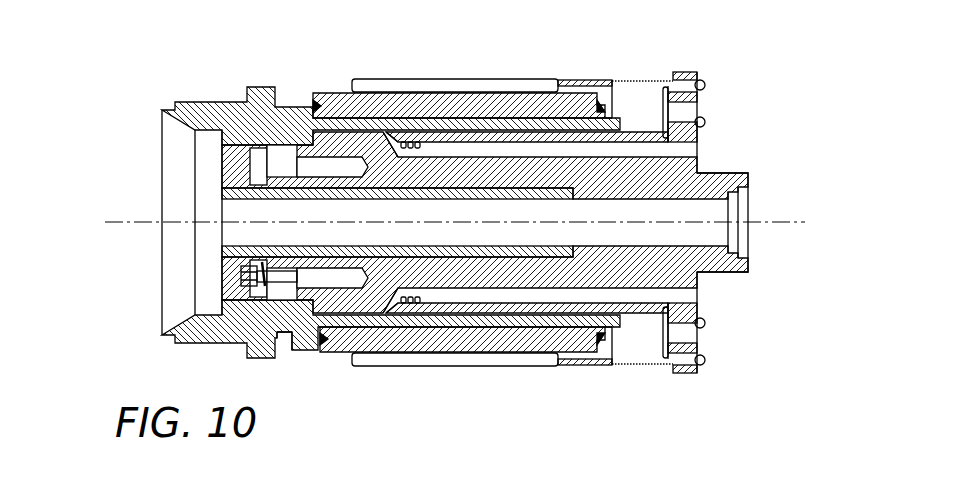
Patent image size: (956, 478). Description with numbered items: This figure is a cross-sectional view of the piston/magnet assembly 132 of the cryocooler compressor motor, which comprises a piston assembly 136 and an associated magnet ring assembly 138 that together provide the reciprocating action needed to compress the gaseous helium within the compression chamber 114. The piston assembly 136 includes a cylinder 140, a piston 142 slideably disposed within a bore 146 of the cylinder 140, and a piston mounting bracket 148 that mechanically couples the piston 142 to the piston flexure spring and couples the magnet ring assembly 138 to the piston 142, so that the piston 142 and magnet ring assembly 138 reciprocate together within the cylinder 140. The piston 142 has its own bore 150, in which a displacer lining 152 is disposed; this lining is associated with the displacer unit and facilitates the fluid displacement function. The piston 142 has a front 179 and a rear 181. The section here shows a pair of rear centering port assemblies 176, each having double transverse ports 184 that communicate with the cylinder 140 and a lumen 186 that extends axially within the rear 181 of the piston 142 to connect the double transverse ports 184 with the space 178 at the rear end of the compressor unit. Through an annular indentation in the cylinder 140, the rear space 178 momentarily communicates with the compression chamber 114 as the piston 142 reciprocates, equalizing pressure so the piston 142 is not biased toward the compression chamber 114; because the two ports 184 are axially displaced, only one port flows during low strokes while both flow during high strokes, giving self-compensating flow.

The compression chamber 114 is at (162, 258).
The piston/magnet assembly 132 is at (507, 43).
The piston assembly 136 is at (390, 147).
The magnet ring assembly 138 is at (540, 78).
The cylinder 140 is at (202, 110).
The piston 142 is at (456, 140).
The bore 146 is at (207, 268).
The piston mounting bracket 148 is at (680, 142).
The bore 150 is at (688, 233).
The displacer lining 152 is at (247, 245).
The rear centering port assembly 176 is at (499, 150).
The space 178 is at (782, 198).
The front 179 is at (293, 340).
The rear 181 is at (645, 272).
The double transverse ports 184 is at (437, 317).
The lumen 186 is at (584, 292).